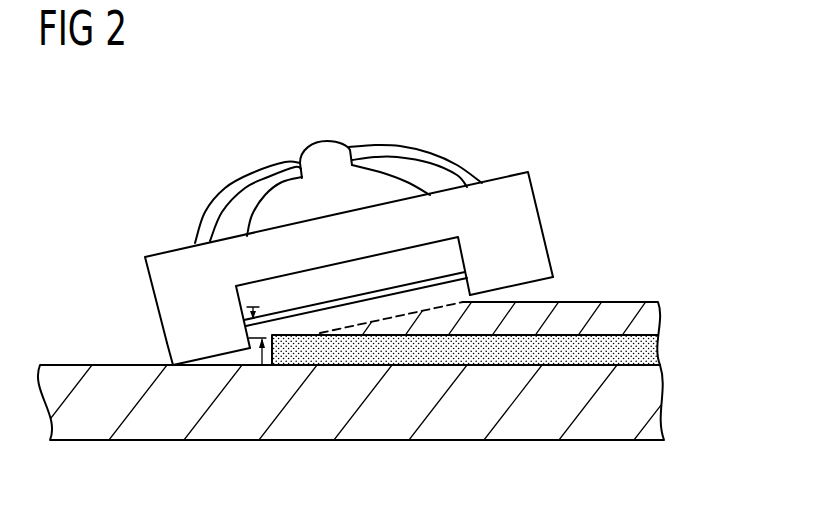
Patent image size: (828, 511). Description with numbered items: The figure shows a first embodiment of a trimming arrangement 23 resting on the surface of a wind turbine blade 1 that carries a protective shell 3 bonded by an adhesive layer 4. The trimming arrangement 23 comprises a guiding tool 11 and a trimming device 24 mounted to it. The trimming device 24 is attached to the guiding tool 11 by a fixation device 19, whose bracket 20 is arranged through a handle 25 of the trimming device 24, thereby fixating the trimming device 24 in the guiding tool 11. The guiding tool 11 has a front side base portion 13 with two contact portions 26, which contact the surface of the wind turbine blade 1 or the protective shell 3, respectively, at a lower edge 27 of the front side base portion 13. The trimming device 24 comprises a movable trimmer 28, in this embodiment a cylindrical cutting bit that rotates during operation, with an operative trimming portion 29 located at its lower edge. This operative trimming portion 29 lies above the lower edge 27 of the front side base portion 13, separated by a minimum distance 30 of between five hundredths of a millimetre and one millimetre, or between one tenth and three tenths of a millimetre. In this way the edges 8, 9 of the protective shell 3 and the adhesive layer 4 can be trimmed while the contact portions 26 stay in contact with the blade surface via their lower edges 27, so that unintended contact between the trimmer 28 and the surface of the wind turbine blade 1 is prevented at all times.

The wind turbine blade 1 is at (662, 414).
The protective shell 3 is at (658, 312).
The adhesive layer 4 is at (658, 348).
The edge of the protective shell 8 is at (400, 305).
The edge of the adhesive layer 9 is at (282, 338).
The guiding tool 11 is at (515, 225).
The front side base portion 13 is at (178, 292).
The fixation device 19 is at (248, 178).
The bracket 20 is at (408, 147).
The trimming arrangement 23 is at (469, 104).
The trimming device 24 is at (378, 177).
The handle 25 is at (324, 141).
The contact portions 26 is at (533, 277).
The lower edge 27 is at (533, 296).
The trimmer 28 is at (442, 262).
The operative trimming portion 29 is at (338, 305).
The minimum distance 30 is at (248, 338).